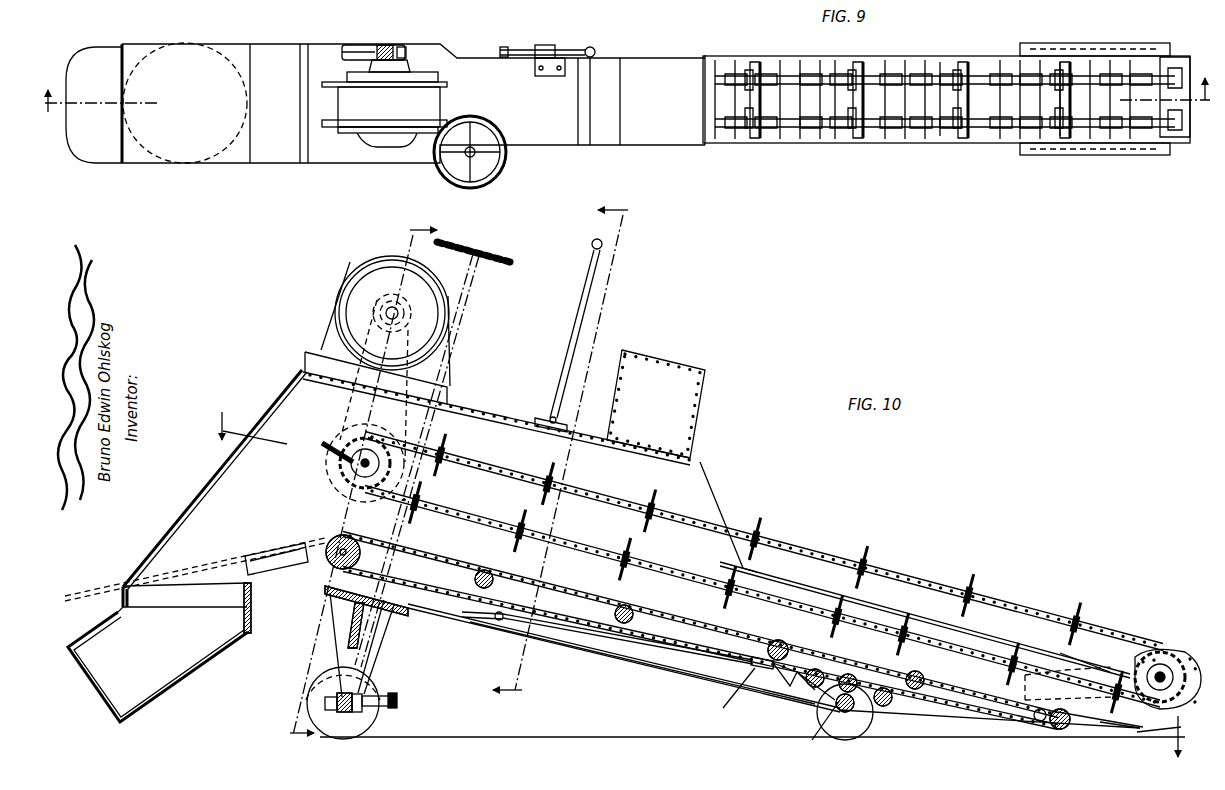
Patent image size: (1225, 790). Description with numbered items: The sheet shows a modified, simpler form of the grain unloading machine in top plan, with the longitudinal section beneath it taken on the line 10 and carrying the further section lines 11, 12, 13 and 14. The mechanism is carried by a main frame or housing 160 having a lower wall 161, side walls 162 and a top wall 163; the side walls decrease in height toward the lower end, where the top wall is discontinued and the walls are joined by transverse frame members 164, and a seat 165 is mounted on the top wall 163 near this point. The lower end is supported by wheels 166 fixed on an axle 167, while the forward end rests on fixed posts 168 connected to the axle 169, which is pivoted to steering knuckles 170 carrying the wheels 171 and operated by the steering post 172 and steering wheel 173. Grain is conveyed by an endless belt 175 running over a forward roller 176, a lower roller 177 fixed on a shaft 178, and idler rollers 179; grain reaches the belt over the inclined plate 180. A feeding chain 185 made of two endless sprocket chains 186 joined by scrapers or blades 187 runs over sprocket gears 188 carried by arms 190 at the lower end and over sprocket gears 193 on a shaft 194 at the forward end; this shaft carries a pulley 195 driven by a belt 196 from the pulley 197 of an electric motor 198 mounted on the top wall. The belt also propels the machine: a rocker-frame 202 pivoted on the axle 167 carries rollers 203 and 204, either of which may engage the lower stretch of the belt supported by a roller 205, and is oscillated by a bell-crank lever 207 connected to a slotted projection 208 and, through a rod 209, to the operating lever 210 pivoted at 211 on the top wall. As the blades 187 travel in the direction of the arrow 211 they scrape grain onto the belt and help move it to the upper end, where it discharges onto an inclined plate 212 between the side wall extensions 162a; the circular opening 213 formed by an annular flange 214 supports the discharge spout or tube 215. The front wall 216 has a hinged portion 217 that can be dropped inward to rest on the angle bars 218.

In FIG. 9, the section line 10— 10 is at (626, 105).
In FIG. 10, the section line 11— 11 is at (704, 584).
In FIG. 10, the section line 12— 12 is at (880, 563).
In FIG. 10, the section line 13— 13 is at (358, 480).
In FIG. 10, the section line 14— 14 is at (505, 709).
In FIG. 9, the main frame or housing 160 is at (1130, 135).
In FIG. 10, the main frame or housing 160 is at (464, 620).
In FIG. 10, the lower wall 161 is at (580, 645).
In FIG. 10, the side walls 162 is at (722, 515).
In FIG. 10, the extensions of the side walls 162a is at (212, 497).
In FIG. 9, the top wall 163 is at (548, 135).
In FIG. 10, the top wall 163 is at (500, 415).
In FIG. 9, the transverse frame members 164 is at (1000, 62).
In FIG. 10, the transverse frame members 164 is at (1008, 630).
In FIG. 9, the seat 165 is at (678, 135).
In FIG. 10, the seat 165 is at (703, 405).
In FIG. 10, the wheels 166 is at (850, 735).
In FIG. 10, the axle 167 is at (812, 740).
In FIG. 10, the fixed posts 168 is at (375, 655).
In FIG. 10, the axle 169 is at (1163, 670).
In FIG. 10, the steering knuckles 170 is at (352, 715).
In FIG. 10, the wheels 171 is at (378, 712).
In FIG. 10, the steering post 172 is at (458, 318).
In FIG. 9, the steering wheel 173 is at (505, 165).
In FIG. 10, the steering wheel 173 is at (500, 259).
In FIG. 10, the endless belt 175 is at (702, 626).
In FIG. 10, the roller 176 is at (323, 625).
In FIG. 10, the roller 177 is at (328, 565).
In FIG. 10, the shaft 178 is at (1050, 725).
In FIG. 10, the idler rollers 179 is at (475, 580).
In FIG. 10, the inclined plate 180 is at (1118, 700).
In FIG. 9, the feeding chain 185 is at (905, 116).
In FIG. 10, the feeding chain 185 is at (918, 583).
In FIG. 10, the endless sprocket chains 186 is at (990, 604).
In FIG. 9, the scrapers or blades 187 is at (862, 140).
In FIG. 10, the scrapers or blades 187 is at (555, 478).
In FIG. 10, the sprocket gears 188 is at (1158, 652).
In FIG. 9, the arms 190 is at (1122, 48).
In FIG. 10, the arms 190 is at (1112, 670).
In FIG. 10, the sprocket gears 193 is at (360, 468).
In FIG. 10, the shaft 194 is at (355, 485).
In FIG. 9, the pulley 195 is at (358, 44).
In FIG. 10, the pulley 195 is at (325, 462).
In FIG. 9, the belt 196 is at (385, 44).
In FIG. 10, the belt 196 is at (345, 418).
In FIG. 9, the pulley 197 is at (405, 45).
In FIG. 9, the electric motor 198 is at (362, 110).
In FIG. 10, the electric motor 198 is at (358, 292).
In FIG. 10, the rocker-frame 202 is at (795, 690).
In FIG. 10, the roller 203 is at (858, 700).
In FIG. 10, the roller 204 is at (800, 690).
In FIG. 10, the roller 205 is at (822, 672).
In FIG. 10, the bell-crank lever 207 is at (725, 708).
In FIG. 10, the slotted projection 208 is at (782, 643).
In FIG. 10, the rod 209 is at (640, 646).
In FIG. 9, the operating lever 210 is at (578, 50).
In FIG. 10, the operating lever 210 is at (588, 318).
In FIG. 9, the pivot 211 is at (552, 50).
In FIG. 10, the pivot 211 is at (549, 415).
In FIG. 10, the inclined plate 212 is at (262, 620).
In FIG. 10, the circular opening 213 is at (150, 600).
In FIG. 10, the annular flange 214 is at (238, 608).
In FIG. 9, the discharge spout or tube 215 is at (92, 55).
In FIG. 10, the discharge spout or tube 215 is at (172, 668).
In FIG. 9, the front wall 216 is at (275, 52).
In FIG. 10, the front wall 216 is at (280, 390).
In FIG. 9, the hinged portion 217 is at (185, 55).
In FIG. 10, the hinged portion 217 is at (180, 522).
In FIG. 10, the angle bars 218 is at (262, 558).